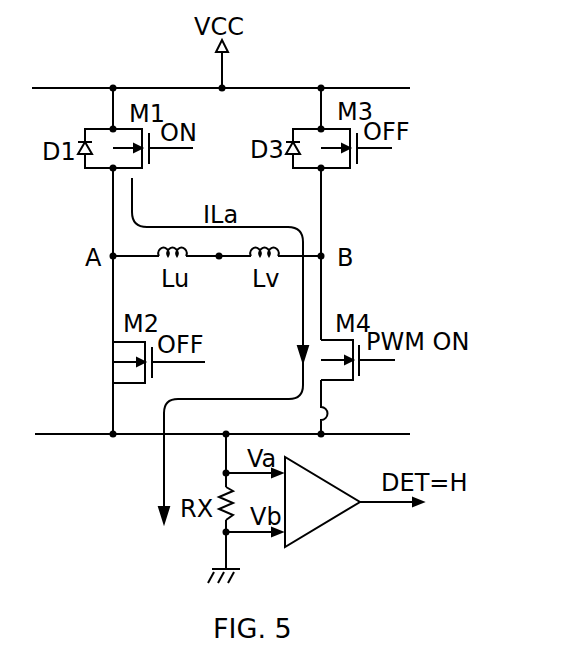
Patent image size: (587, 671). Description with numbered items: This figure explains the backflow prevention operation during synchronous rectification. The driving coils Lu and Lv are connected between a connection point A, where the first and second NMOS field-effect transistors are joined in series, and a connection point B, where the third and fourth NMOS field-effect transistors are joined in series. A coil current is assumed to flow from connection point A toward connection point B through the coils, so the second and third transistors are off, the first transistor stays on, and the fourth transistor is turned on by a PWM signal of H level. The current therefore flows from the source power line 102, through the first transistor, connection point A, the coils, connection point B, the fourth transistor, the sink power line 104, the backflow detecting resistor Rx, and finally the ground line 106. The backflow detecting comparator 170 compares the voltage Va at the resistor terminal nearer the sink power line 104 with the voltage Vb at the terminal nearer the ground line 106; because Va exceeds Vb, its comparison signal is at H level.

The source power line 102 is at (386, 88).
The sink power line 104 is at (397, 432).
The ground line 106 is at (272, 582).
The backflow detecting comparator 170 is at (354, 472).